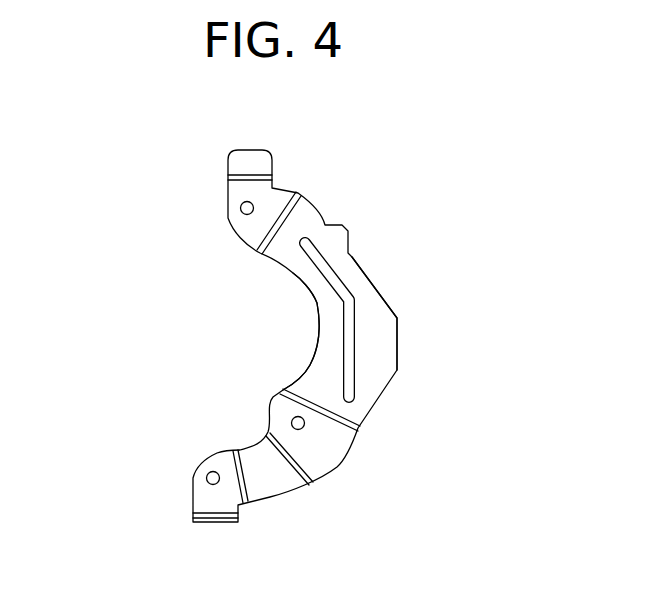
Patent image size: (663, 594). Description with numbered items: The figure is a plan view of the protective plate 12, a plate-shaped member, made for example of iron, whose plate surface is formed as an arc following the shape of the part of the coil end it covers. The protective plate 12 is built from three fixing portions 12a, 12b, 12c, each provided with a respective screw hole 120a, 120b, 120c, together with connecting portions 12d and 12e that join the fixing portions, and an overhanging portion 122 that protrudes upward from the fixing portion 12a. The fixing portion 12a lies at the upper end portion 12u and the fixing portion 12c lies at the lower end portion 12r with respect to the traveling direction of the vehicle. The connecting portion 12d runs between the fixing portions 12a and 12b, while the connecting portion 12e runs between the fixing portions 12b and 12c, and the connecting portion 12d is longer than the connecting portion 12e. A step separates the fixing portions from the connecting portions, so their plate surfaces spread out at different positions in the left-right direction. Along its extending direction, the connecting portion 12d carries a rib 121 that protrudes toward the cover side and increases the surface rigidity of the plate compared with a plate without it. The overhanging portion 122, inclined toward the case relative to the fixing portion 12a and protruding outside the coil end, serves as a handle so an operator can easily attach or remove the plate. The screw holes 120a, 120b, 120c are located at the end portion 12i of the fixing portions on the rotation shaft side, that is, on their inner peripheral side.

The protective plate 12 is at (332, 203).
The fixing portion 12a is at (277, 198).
The fixing portion 12b is at (322, 450).
The fixing portion 12c is at (238, 500).
The connecting portion 12d is at (368, 302).
The connecting portion 12e is at (272, 473).
The end portion 12i is at (312, 322).
The lower end portion 12r is at (183, 498).
The upper end portion 12u is at (220, 225).
The screw hole 120a is at (240, 207).
The screw hole 120b is at (296, 419).
The screw hole 120c is at (207, 478).
The rib 121 is at (337, 286).
The overhanging portion 122 is at (252, 163).